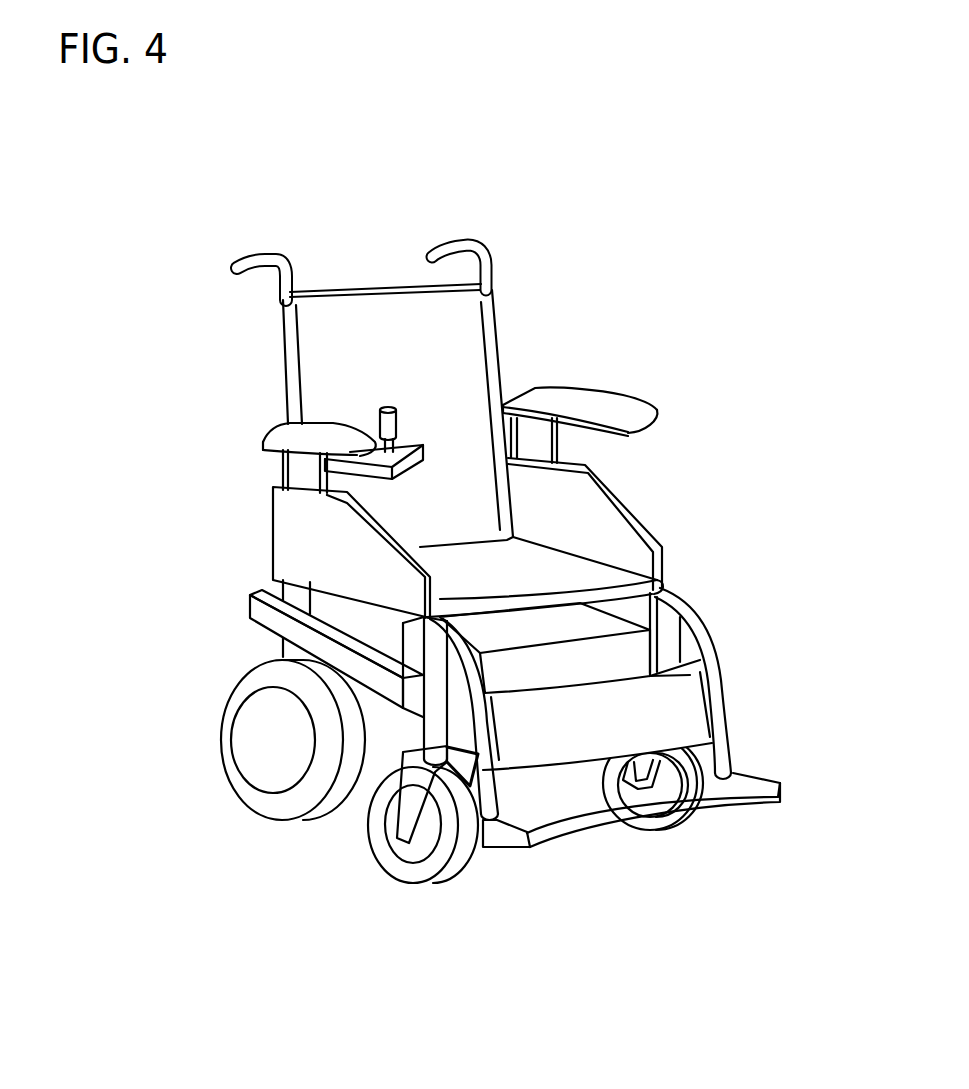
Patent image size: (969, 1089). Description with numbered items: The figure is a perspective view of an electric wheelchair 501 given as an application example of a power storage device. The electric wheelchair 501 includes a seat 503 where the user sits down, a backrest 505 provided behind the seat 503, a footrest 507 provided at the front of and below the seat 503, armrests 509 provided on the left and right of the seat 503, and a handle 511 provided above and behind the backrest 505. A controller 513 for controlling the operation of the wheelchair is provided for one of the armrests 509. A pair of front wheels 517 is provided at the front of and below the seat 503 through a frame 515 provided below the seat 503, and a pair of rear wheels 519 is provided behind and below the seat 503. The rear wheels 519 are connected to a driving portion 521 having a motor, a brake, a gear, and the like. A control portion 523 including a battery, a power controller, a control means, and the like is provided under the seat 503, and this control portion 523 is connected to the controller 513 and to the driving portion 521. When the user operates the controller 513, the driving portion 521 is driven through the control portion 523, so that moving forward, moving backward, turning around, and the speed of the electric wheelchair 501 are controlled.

The electric wheelchair 501 is at (627, 250).
The seat 503 is at (577, 573).
The backrest 505 is at (443, 393).
The footrest 507 is at (590, 818).
The armrests 509 is at (618, 412).
The handle 511 is at (460, 248).
The controller 513 is at (387, 422).
The frame 515 is at (667, 643).
The front wheels 517 is at (420, 853).
The rear wheels 519 is at (270, 767).
The driving portion 521 is at (387, 737).
The control portion 523 is at (633, 664).